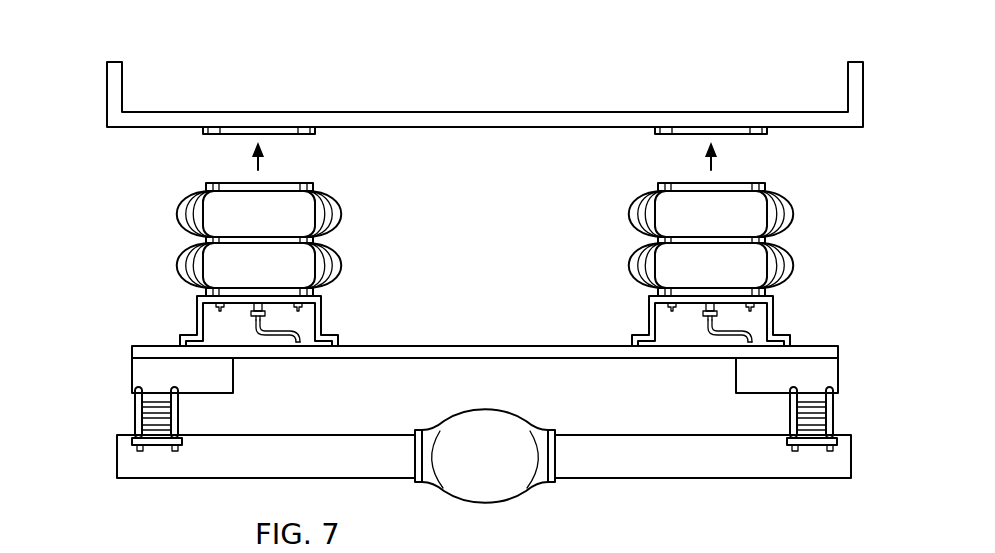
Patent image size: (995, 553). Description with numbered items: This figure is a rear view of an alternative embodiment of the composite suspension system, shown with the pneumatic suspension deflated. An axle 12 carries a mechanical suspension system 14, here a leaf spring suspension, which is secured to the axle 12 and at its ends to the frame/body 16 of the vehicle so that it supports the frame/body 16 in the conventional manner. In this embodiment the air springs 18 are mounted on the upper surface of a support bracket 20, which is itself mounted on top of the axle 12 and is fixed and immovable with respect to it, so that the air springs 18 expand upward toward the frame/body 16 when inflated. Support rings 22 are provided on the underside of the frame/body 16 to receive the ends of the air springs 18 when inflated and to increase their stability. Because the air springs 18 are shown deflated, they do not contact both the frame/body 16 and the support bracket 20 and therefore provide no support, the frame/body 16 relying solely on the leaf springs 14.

The axle 12 is at (618, 478).
The mechanical suspension system 14 is at (150, 419).
The frame/body 16 is at (107, 97).
The air springs 18 is at (177, 217).
The support bracket 20 is at (497, 346).
The support rings 22 is at (307, 134).